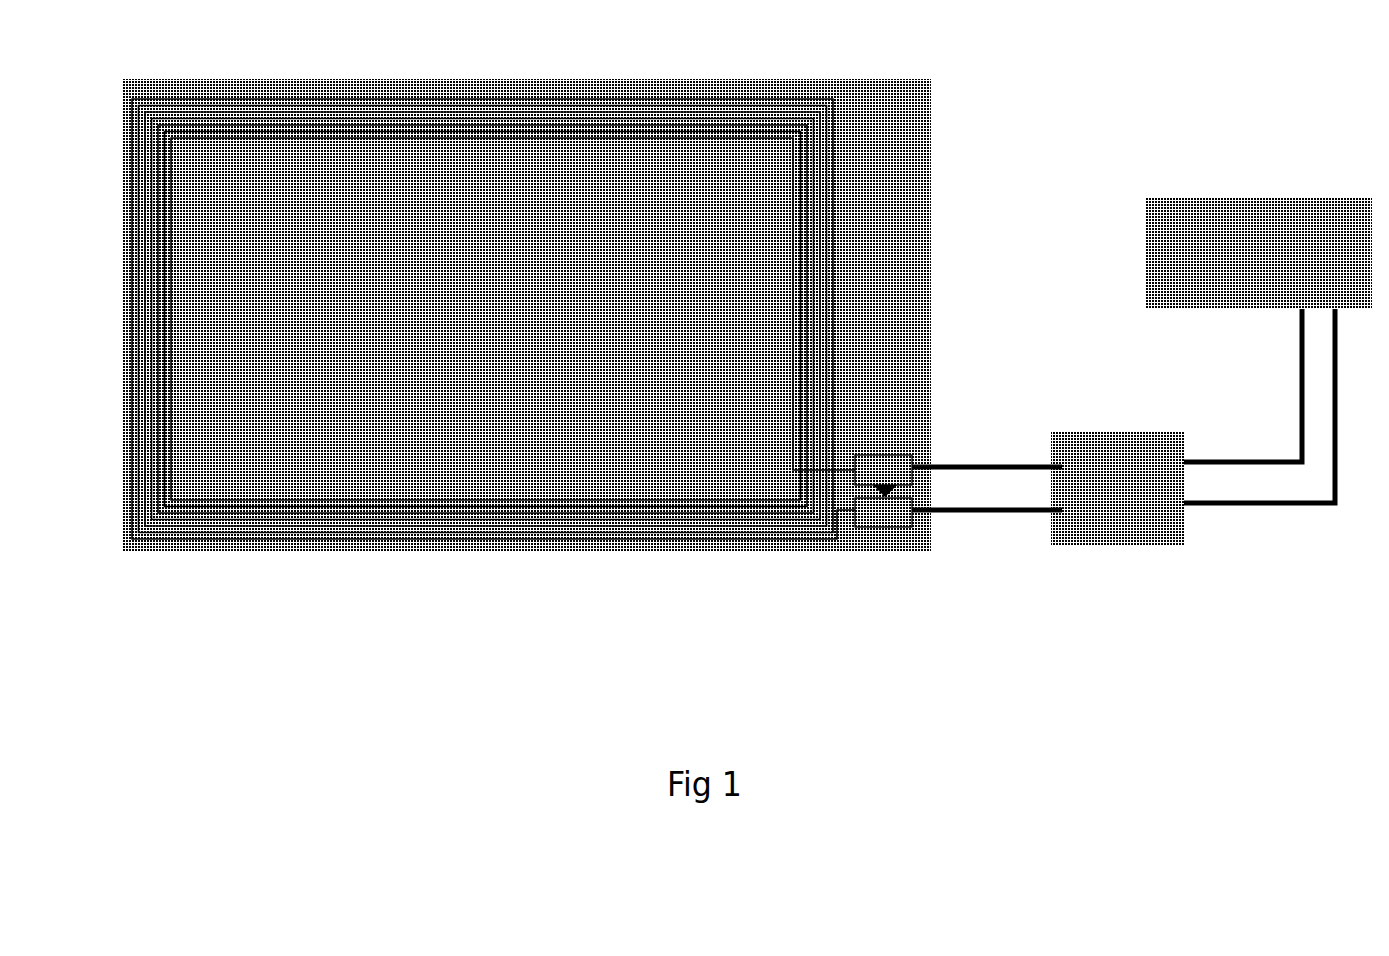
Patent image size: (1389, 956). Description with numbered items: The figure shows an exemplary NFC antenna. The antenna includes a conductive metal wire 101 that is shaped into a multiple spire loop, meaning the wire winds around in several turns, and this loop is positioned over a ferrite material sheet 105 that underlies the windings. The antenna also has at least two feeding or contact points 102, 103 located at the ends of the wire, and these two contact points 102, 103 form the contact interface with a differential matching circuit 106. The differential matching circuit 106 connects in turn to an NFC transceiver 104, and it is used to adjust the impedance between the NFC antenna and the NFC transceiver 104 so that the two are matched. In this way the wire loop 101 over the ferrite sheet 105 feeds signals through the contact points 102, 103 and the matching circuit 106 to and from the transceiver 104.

The conductive metal wire 101 is at (120, 236).
The contact point 102 is at (889, 447).
The contact point 103 is at (874, 525).
The NFC transceiver 104 is at (1134, 206).
The ferrite material sheet 105 is at (338, 432).
The differential matching circuit 106 is at (1097, 560).